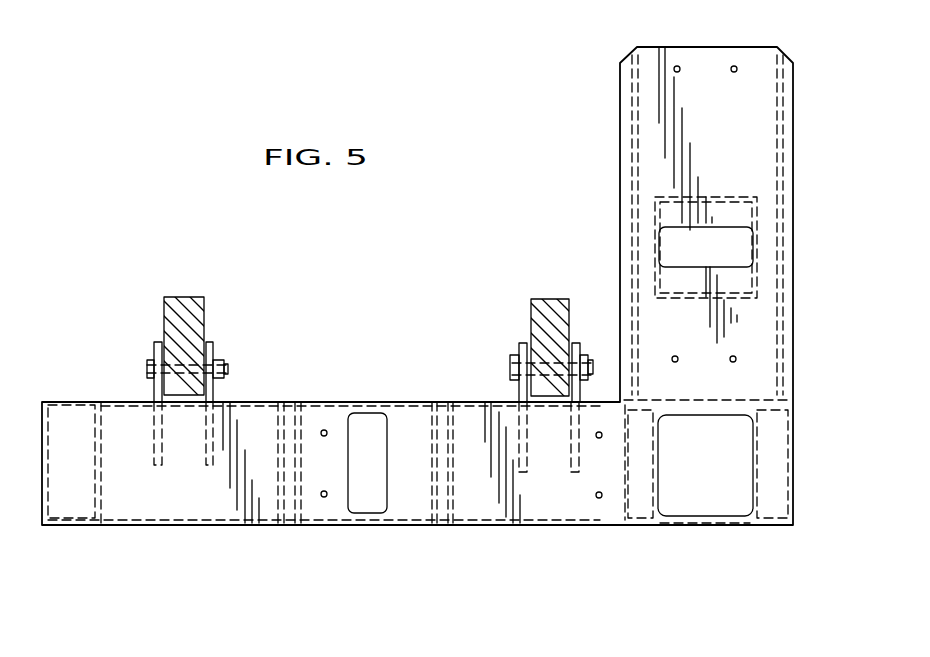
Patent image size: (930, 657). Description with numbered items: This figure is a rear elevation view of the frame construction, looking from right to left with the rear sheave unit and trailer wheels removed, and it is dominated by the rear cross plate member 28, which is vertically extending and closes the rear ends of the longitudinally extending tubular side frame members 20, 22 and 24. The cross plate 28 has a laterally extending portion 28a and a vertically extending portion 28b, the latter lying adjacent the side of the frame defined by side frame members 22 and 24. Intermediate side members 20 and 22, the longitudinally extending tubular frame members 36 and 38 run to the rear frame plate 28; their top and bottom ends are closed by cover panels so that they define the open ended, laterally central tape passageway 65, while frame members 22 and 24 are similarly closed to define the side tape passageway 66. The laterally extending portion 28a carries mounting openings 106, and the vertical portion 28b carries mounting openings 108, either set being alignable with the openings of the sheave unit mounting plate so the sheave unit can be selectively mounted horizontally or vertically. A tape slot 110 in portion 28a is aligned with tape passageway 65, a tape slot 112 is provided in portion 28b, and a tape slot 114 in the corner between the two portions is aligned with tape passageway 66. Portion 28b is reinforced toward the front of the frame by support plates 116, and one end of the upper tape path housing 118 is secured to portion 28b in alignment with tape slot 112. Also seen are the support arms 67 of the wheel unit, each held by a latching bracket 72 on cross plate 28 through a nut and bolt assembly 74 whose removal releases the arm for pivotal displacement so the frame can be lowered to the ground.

The side frame member 20 is at (72, 523).
The side frame member 22 is at (642, 520).
The side frame member 24 is at (775, 525).
The rear cross plate member 28 is at (565, 505).
The laterally extending portion of cross plate 28a is at (212, 502).
The vertically extending portion of cross plate 28b is at (651, 150).
The longitudinally extending tubular frame member 36 is at (291, 523).
The longitudinally extending tubular frame member 38 is at (440, 523).
The tape passageway 65 is at (404, 418).
The tape passageway 66 is at (690, 487).
The support arm 67 is at (185, 308).
The latching bracket 72 is at (225, 344).
The nut and bolt assembly 74 is at (149, 368).
The mounting openings 106 is at (324, 429).
The mounting openings 108 is at (731, 68).
The tape slot 110 is at (383, 490).
The tape slot 112 is at (745, 230).
The tape slot 114 is at (710, 510).
The support plates 116 is at (632, 205).
The upper tape path housing 118 is at (722, 197).